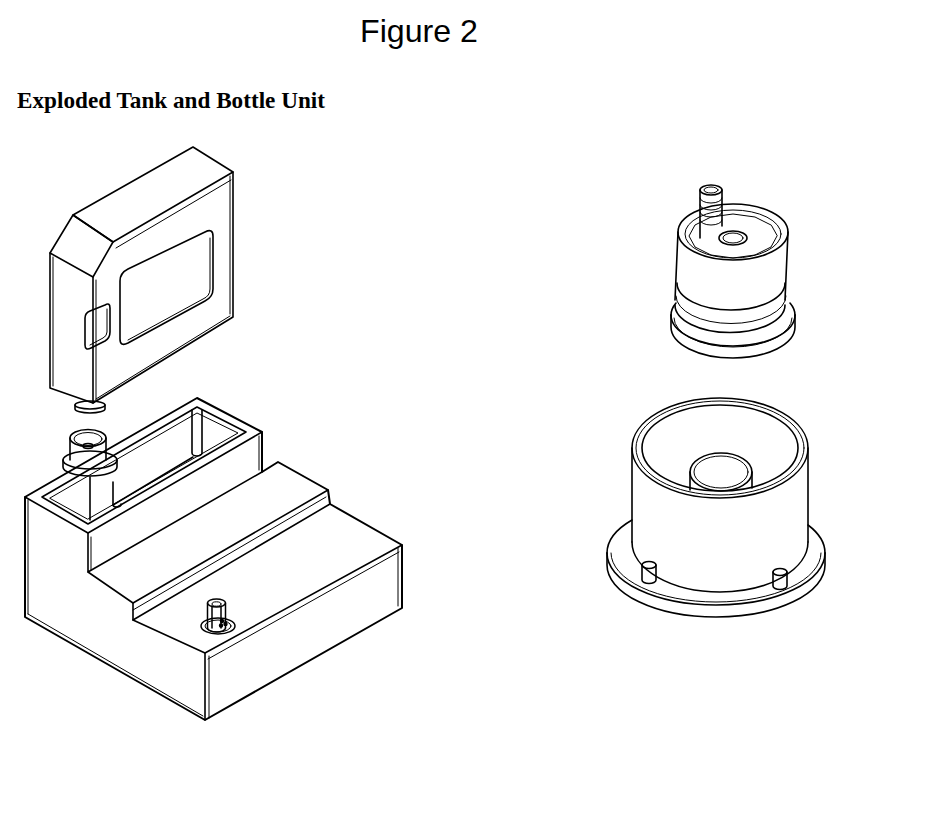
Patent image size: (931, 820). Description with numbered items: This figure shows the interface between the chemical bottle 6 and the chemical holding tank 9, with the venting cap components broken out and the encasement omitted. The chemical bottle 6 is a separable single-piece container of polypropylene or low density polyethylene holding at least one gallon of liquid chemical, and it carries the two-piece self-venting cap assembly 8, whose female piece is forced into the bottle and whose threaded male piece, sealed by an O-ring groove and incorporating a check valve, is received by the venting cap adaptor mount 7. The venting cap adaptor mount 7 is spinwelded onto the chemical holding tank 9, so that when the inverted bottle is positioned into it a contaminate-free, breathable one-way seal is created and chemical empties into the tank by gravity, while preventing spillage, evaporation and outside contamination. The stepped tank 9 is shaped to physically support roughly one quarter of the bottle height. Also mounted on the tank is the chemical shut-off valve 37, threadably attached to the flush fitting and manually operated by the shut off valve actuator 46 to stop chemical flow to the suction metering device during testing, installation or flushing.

The chemical bottle 6 is at (258, 218).
The venting cap adaptor mount 7 is at (117, 398).
The self-venting cap assembly 8 is at (132, 453).
The chemical holding tank 9 is at (236, 559).
The chemical shut-off valve 37 is at (235, 613).
The shut off valve actuator 46 is at (225, 635).